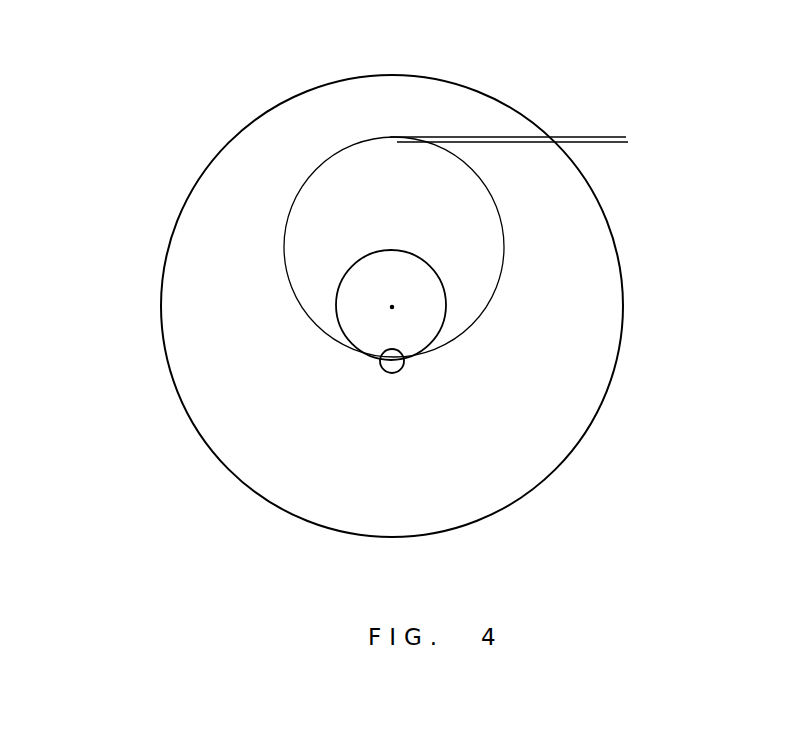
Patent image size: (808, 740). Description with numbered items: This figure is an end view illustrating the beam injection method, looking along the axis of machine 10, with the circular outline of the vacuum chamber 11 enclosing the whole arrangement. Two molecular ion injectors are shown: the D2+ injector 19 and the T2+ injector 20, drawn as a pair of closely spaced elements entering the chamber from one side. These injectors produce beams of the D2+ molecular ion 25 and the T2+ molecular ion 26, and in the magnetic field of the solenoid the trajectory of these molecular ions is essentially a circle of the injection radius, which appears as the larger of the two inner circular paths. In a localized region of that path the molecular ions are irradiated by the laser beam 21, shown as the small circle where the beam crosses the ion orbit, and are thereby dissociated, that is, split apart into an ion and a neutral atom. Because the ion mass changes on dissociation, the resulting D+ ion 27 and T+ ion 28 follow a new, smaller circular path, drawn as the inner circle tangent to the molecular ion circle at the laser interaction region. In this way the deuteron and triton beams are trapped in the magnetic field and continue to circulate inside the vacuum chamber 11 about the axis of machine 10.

The axis of machine 10 is at (392, 307).
The vacuum chamber 11 is at (428, 75).
The D2+ injector 19 is at (583, 136).
The T2+ injector 20 is at (624, 136).
The laser beam 21 is at (403, 367).
The D2+ molecular ion 25 is at (505, 231).
The T2+ molecular ion 26 is at (507, 250).
The D+ ion 27 is at (447, 300).
The T+ ion 28 is at (447, 323).